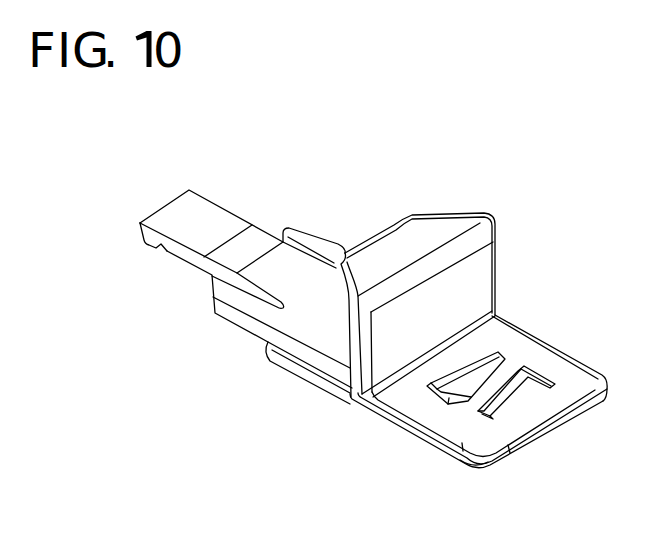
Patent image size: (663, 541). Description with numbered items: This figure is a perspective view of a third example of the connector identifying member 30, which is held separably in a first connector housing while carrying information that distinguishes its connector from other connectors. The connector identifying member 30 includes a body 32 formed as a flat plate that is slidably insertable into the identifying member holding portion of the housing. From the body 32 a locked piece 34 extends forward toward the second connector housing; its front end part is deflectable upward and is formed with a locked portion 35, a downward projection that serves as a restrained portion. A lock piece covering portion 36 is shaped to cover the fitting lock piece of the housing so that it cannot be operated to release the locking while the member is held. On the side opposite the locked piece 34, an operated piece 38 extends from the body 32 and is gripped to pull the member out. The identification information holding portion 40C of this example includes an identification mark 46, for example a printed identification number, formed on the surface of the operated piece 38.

The connector identifying member 30 is at (480, 182).
The body 32 is at (240, 332).
The locked piece 34 is at (205, 207).
The locked portion 35 is at (150, 250).
The lock piece covering portion 36 is at (383, 232).
The operated piece 38 is at (540, 417).
The identification information holding portion 40C is at (399, 451).
The identification mark 46 is at (493, 383).